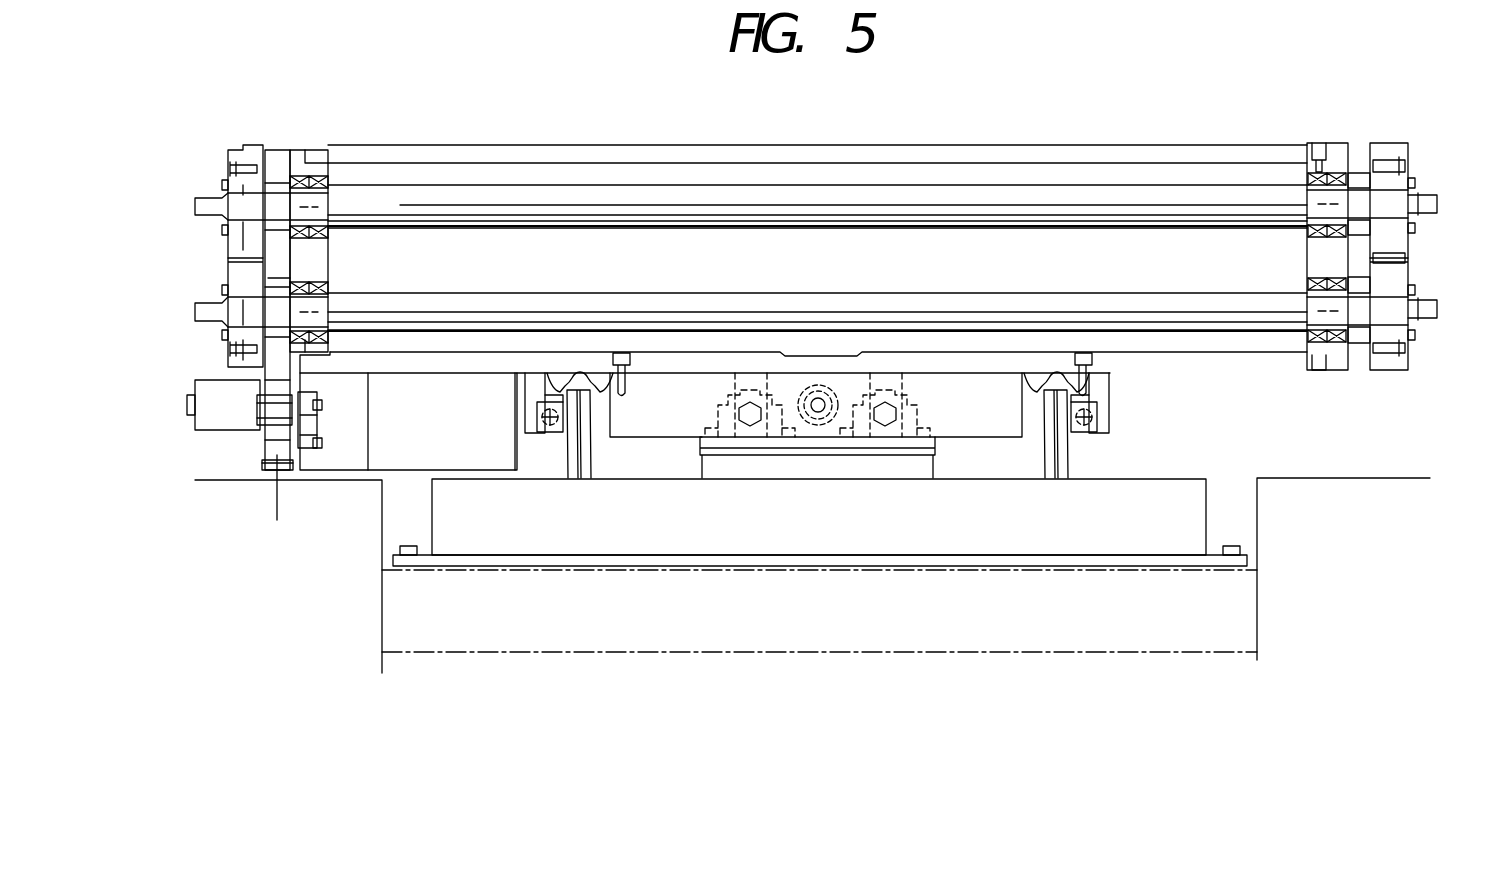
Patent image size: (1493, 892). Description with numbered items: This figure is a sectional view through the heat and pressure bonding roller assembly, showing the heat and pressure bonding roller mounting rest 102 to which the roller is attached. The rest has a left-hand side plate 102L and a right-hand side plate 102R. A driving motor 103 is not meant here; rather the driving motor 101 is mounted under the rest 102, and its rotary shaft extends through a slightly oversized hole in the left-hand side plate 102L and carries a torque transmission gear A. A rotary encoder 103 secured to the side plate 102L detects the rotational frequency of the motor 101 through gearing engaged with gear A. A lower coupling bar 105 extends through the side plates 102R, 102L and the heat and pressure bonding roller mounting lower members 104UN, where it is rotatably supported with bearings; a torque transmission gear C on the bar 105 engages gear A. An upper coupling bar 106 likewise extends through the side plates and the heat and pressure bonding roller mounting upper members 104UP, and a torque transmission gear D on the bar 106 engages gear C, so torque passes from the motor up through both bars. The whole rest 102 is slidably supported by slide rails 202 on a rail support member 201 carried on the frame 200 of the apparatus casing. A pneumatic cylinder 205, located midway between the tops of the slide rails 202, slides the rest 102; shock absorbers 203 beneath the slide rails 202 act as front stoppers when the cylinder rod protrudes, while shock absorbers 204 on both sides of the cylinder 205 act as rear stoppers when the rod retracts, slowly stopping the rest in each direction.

The driving motor 101 is at (401, 455).
The heat and pressure bonding roller mounting rest 102 is at (967, 146).
The left-hand side plate 102L is at (323, 165).
The right-hand side plate 102R is at (1336, 146).
The rotary encoder 103 is at (196, 390).
The heat and pressure bonding roller mounting upper members 104UP is at (236, 150).
The heat and pressure bonding roller mounting lower members 104UN is at (250, 275).
The coupling bar 105 is at (954, 294).
The coupling bar 106 is at (1060, 184).
The frame 200 is at (405, 612).
The rail support member 201 is at (1016, 545).
The slide rails 202 is at (577, 440).
The shock absorbers 203 is at (548, 432).
The shock absorbers 204 is at (751, 416).
The pneumatic cylinder 205 is at (818, 414).
The torque transmission gear A is at (277, 504).
The torque transmission gear C is at (291, 280).
The torque transmission gear D is at (281, 150).